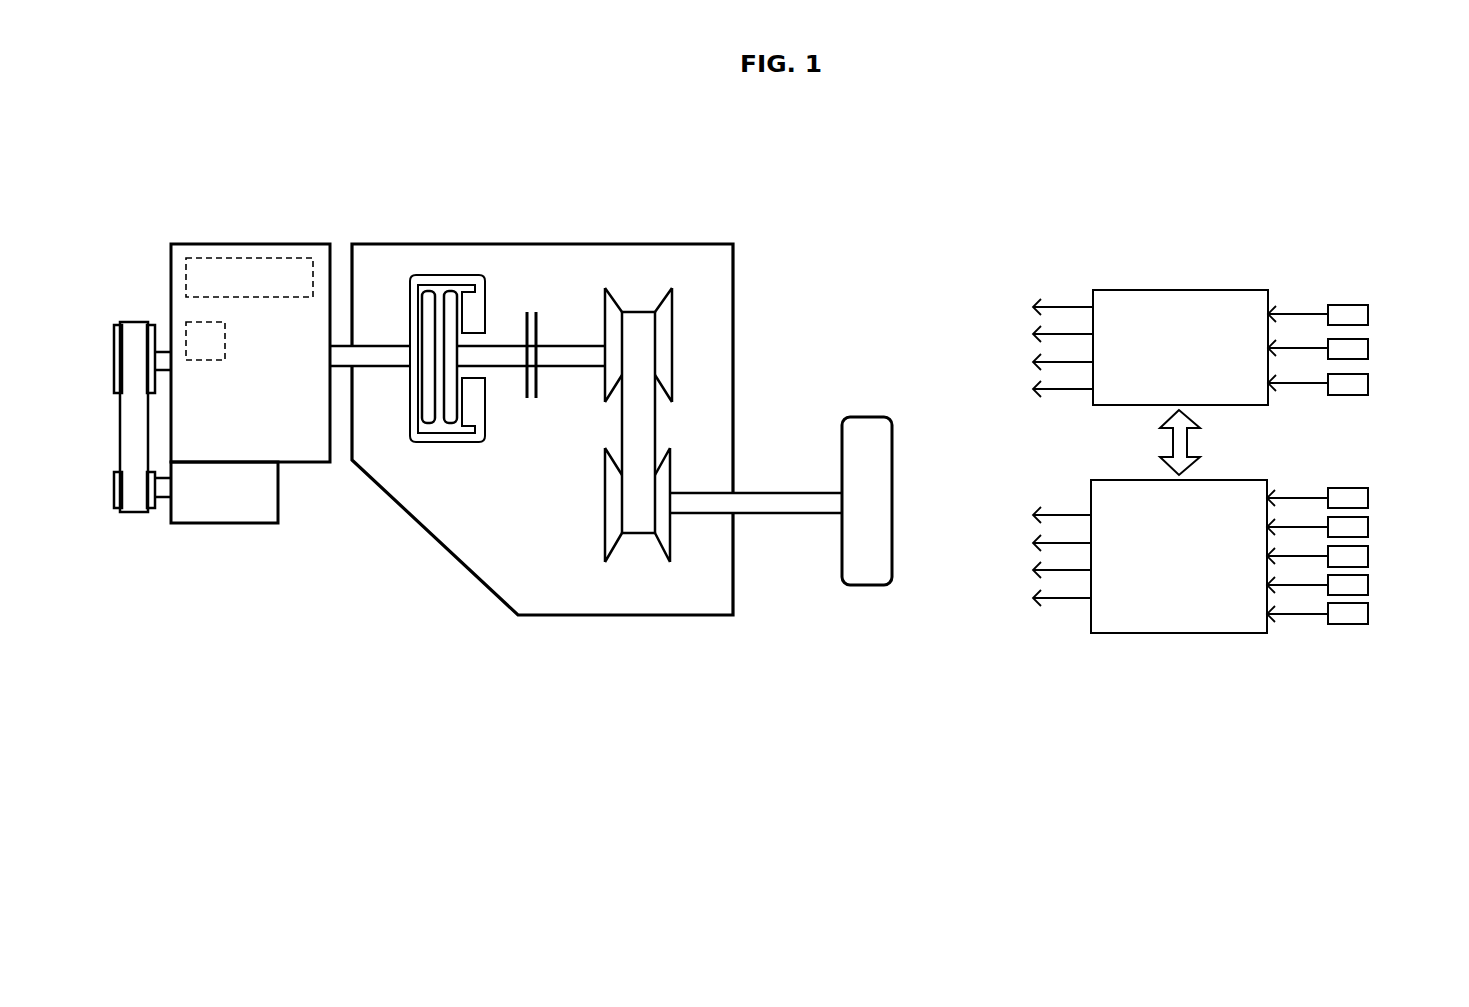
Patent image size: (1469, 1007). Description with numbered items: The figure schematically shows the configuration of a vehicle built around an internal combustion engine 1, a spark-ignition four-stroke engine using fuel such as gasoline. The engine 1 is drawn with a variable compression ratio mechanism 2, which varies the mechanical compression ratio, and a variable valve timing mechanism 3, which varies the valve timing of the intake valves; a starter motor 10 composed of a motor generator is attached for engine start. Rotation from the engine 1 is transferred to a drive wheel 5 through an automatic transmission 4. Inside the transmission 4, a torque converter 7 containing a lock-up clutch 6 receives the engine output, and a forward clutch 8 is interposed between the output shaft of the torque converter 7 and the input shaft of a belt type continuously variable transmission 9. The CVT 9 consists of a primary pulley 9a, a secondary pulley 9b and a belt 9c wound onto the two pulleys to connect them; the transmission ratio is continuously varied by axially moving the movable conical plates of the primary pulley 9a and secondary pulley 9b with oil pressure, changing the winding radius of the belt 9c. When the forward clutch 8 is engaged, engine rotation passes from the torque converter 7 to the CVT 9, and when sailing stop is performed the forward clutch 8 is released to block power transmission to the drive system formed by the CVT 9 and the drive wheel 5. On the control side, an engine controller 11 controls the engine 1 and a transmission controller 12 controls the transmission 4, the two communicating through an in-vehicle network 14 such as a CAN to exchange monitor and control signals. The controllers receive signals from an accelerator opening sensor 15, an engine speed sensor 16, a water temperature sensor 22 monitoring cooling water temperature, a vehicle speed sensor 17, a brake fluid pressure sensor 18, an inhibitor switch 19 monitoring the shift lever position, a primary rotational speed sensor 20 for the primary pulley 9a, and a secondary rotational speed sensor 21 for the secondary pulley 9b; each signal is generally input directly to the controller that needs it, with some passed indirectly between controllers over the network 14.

The internal combustion engine 1 is at (198, 238).
The variable compression ratio mechanism 2 is at (258, 268).
The variable valve timing mechanism 3 is at (205, 342).
The automatic transmission 4 is at (640, 235).
The drive wheel 5 is at (867, 578).
The lock-up clutch 6 is at (428, 424).
The torque converter 7 is at (410, 440).
The forward clutch 8 is at (531, 312).
The belt type continuously variable transmission (CVT) 9 is at (709, 404).
The primary pulley 9a is at (662, 345).
The secondary pulley 9b is at (662, 480).
The belt 9c is at (636, 440).
The starter motor 10 is at (227, 500).
The engine controller 11 is at (1210, 313).
The transmission controller 12 is at (1222, 478).
The in-vehicle network 14 is at (1173, 443).
The accelerator opening sensor 15 is at (1348, 313).
The engine speed sensor 16 is at (1348, 348).
The vehicle speed sensor 17 is at (1348, 497).
The brake fluid pressure sensor 18 is at (1348, 523).
The inhibitor switch 19 is at (1350, 552).
The primary rotational speed sensor 20 is at (1350, 583).
The secondary rotational speed sensor 21 is at (1353, 613).
The water temperature sensor 22 is at (1358, 385).